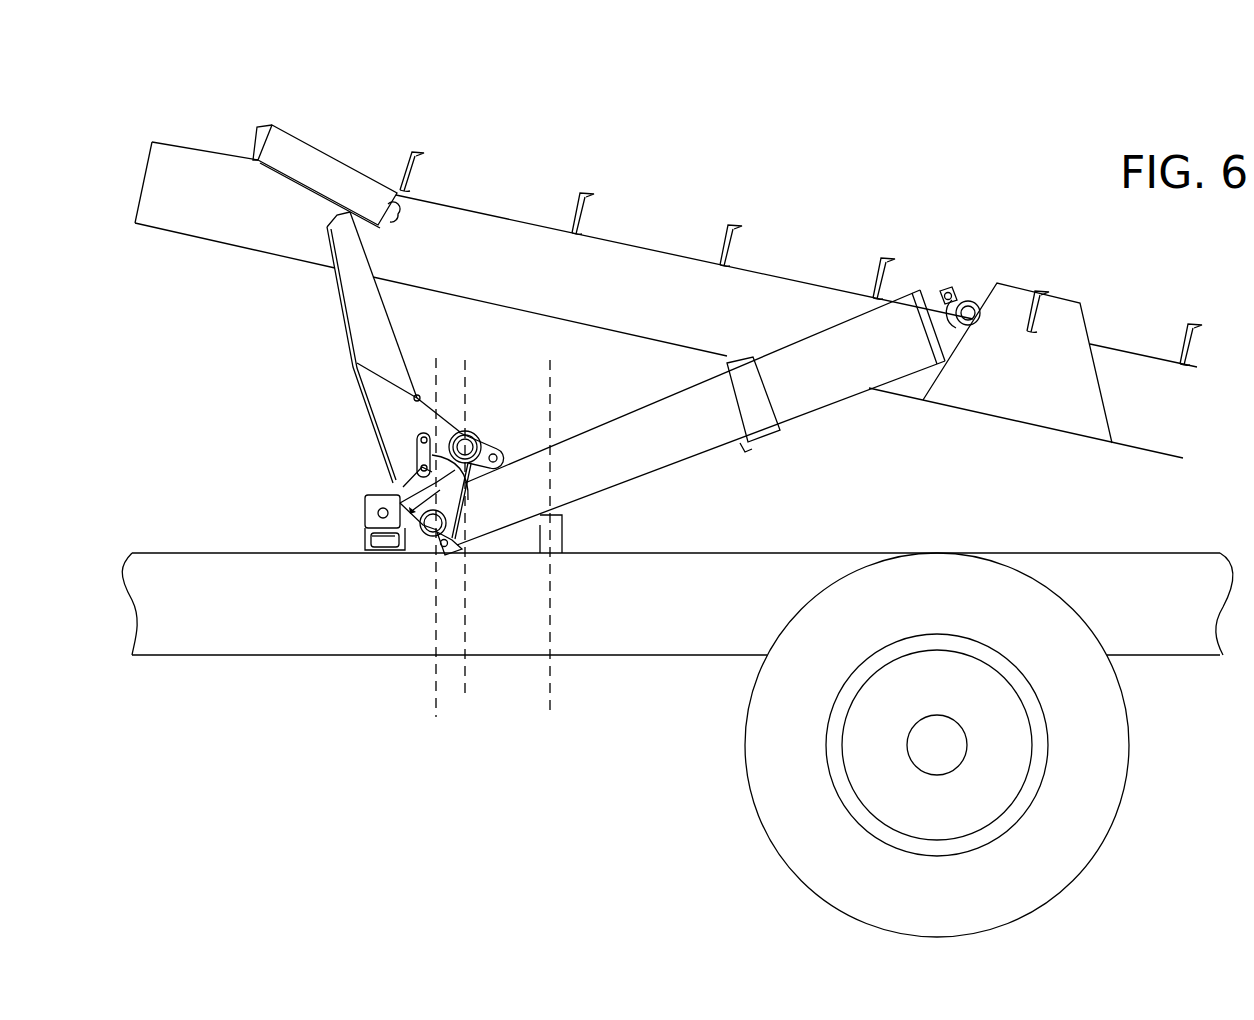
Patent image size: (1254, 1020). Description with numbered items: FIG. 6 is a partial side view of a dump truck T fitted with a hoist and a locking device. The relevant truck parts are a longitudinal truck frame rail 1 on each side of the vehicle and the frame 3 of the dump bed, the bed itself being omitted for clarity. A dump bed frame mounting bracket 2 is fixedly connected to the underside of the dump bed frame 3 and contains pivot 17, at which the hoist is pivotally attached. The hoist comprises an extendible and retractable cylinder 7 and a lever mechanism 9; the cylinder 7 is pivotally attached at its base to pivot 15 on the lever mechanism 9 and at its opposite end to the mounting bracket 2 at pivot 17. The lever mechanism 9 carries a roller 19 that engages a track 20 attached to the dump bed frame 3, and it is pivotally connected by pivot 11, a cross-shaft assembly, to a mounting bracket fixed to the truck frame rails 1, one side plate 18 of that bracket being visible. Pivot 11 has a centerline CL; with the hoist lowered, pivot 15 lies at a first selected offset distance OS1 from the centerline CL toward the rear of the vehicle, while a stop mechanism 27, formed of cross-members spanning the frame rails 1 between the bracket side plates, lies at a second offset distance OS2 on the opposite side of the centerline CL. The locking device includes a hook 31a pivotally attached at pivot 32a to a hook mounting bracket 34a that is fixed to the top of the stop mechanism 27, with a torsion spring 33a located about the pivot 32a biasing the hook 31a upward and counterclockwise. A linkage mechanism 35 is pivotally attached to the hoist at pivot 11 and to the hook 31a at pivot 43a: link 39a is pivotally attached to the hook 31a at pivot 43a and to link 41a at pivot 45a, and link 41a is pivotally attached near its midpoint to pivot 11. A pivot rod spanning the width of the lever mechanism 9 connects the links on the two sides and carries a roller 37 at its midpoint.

The dump truck T is at (753, 148).
The longitudinal truck frame rail 1 is at (660, 612).
The dump bed frame mounting bracket 2 is at (987, 396).
The dump bed frame 3 is at (653, 262).
The cylinder 7 is at (668, 452).
The lever mechanism 9 is at (334, 370).
The pivot 11 is at (488, 440).
The pivot 15 is at (432, 537).
The pivot 17 is at (966, 301).
The side plate 18 is at (567, 513).
The roller 19 is at (398, 215).
The track 20 is at (307, 156).
The stop mechanism 27 is at (390, 548).
The hook 31a is at (403, 478).
The pivot 32a is at (378, 513).
The torsion spring 33a is at (408, 507).
The hook mounting bracket 34a is at (366, 532).
The linkage mechanism 35 is at (428, 420).
The roller 37 is at (510, 450).
The link 39a is at (417, 447).
The link 41a is at (447, 427).
The pivot 43a is at (415, 466).
The pivot 45a is at (416, 433).
The centerline CL is at (465, 540).
The first offset distance OS1 is at (551, 553).
The second offset distance OS2 is at (434, 552).